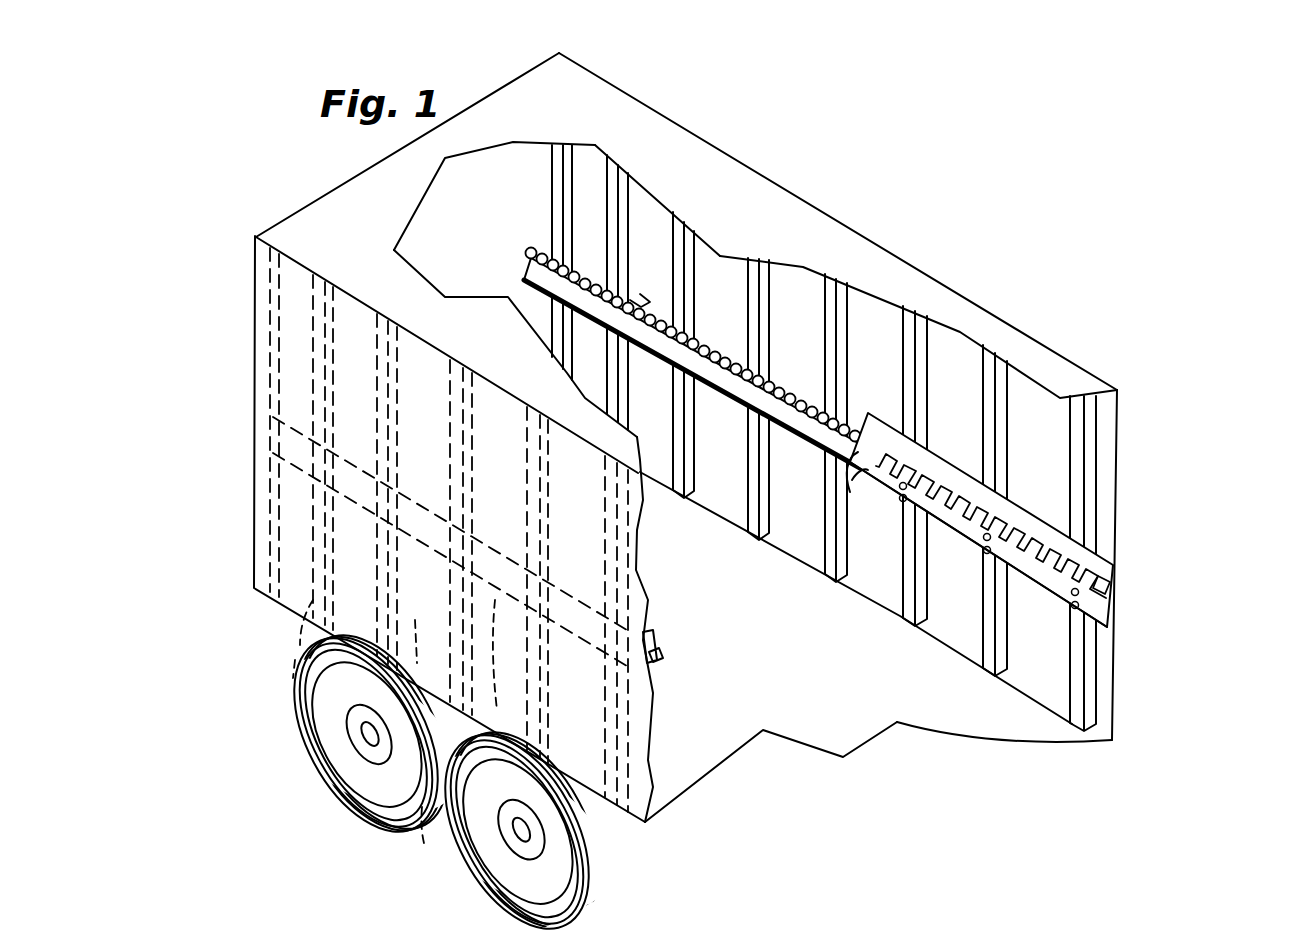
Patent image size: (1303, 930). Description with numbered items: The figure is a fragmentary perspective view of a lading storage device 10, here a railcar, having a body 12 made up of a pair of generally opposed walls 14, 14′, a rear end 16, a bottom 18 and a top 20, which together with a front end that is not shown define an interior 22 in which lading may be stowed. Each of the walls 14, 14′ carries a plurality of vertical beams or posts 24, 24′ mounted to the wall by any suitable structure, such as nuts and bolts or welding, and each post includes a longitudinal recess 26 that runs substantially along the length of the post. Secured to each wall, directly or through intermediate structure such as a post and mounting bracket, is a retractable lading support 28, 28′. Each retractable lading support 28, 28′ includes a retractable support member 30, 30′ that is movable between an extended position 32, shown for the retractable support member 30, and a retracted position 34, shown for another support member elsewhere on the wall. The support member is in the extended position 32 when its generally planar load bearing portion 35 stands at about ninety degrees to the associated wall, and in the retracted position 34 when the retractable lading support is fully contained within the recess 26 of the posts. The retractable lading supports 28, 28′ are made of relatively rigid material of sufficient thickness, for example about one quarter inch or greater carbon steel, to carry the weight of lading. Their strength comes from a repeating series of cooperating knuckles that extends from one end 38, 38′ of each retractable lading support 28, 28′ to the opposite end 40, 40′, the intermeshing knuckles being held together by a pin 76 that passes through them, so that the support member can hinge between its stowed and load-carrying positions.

The lading storage device 10 is at (856, 220).
The body 12 is at (945, 282).
The wall 14 is at (957, 352).
The opposed wall 14′ is at (658, 820).
The rear end 16 is at (320, 190).
The bottom 18 is at (812, 722).
The top 20 is at (738, 195).
The interior 22 is at (856, 691).
The vertical post 24 is at (612, 187).
The vertical post 24′ is at (301, 658).
The longitudinal recess 26 is at (571, 274).
The retractable lading support 28 is at (711, 330).
The retractable lading support 28′ is at (383, 702).
The retractable support member 30 is at (643, 290).
The retractable support member 30′ is at (454, 847).
The extended position 32 is at (745, 256).
The retracted position 34 is at (1110, 560).
The load bearing portion 35 is at (783, 418).
The end 38 is at (860, 453).
The end 38′ is at (656, 688).
The opposite end 40 is at (528, 258).
The opposite end 40′ is at (273, 429).
The pin 76 is at (1118, 600).